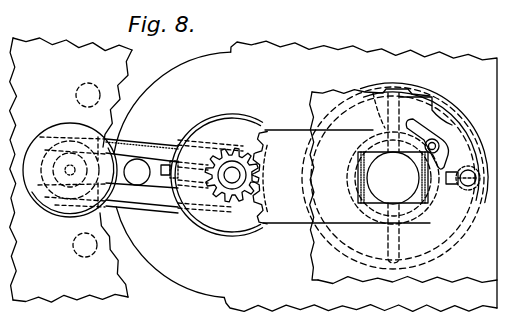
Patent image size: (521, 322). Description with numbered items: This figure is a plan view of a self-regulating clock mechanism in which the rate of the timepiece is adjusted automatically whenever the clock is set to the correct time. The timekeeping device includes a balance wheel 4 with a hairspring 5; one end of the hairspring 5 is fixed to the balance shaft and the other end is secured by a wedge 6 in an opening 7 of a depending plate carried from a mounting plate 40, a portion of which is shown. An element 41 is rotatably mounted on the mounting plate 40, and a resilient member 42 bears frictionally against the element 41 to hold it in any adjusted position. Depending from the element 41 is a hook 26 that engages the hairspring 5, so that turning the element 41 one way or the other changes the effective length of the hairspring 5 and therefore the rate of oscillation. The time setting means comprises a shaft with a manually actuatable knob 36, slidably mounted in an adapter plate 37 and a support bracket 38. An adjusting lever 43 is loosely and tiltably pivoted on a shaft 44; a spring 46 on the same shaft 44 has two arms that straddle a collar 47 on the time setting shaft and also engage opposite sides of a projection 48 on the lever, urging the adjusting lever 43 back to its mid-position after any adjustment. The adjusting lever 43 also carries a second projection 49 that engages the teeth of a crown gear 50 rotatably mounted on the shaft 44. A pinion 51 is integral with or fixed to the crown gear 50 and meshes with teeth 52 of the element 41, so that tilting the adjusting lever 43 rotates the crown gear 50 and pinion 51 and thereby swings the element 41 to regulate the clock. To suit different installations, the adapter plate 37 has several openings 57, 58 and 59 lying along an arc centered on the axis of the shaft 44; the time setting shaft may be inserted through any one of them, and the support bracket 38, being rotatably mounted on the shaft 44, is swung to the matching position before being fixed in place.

The balance wheel 4 is at (446, 107).
The hairspring 5 is at (370, 96).
The wedge 6 is at (480, 178).
The opening 7 is at (447, 190).
The hook 26 is at (437, 144).
The manually actuatable knob 36 is at (55, 127).
The adapter plate 37 is at (62, 48).
The support bracket 38 is at (122, 142).
The mounting plate 40 is at (490, 256).
The element 41 is at (287, 133).
The resilient member 42 is at (418, 206).
The adjusting lever 43 is at (168, 198).
The shaft 44 is at (232, 175).
The spring 46 is at (139, 160).
The collar 47 is at (52, 185).
The projection 48 is at (159, 163).
The second projection 49 is at (176, 158).
The crown gear 50 is at (218, 113).
The pinion 51 is at (232, 207).
The teeth 52 is at (263, 128).
The opening 57 is at (80, 89).
The opening 58 is at (67, 178).
The opening 59 is at (84, 258).